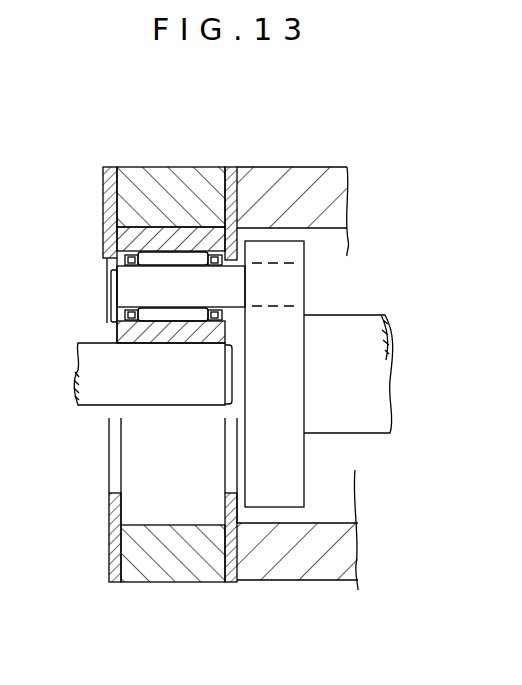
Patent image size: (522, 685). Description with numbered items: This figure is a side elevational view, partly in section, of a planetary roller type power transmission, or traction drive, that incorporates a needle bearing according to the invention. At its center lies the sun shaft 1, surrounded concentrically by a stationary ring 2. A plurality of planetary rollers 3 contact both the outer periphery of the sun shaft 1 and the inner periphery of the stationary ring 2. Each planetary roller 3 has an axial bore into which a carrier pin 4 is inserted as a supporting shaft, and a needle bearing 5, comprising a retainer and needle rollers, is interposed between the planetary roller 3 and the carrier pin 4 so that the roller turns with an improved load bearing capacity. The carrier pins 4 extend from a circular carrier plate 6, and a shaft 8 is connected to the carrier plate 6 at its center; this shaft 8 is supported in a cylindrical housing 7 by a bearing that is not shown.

The sun shaft 1 is at (164, 406).
The stationary ring 2 is at (173, 166).
The planetary roller 3 is at (120, 337).
The carrier pin 4 is at (122, 290).
The needle bearing 5 is at (177, 259).
The carrier plate 6 is at (305, 465).
The cylindrical housing 7 is at (293, 166).
The shaft 8 is at (352, 316).